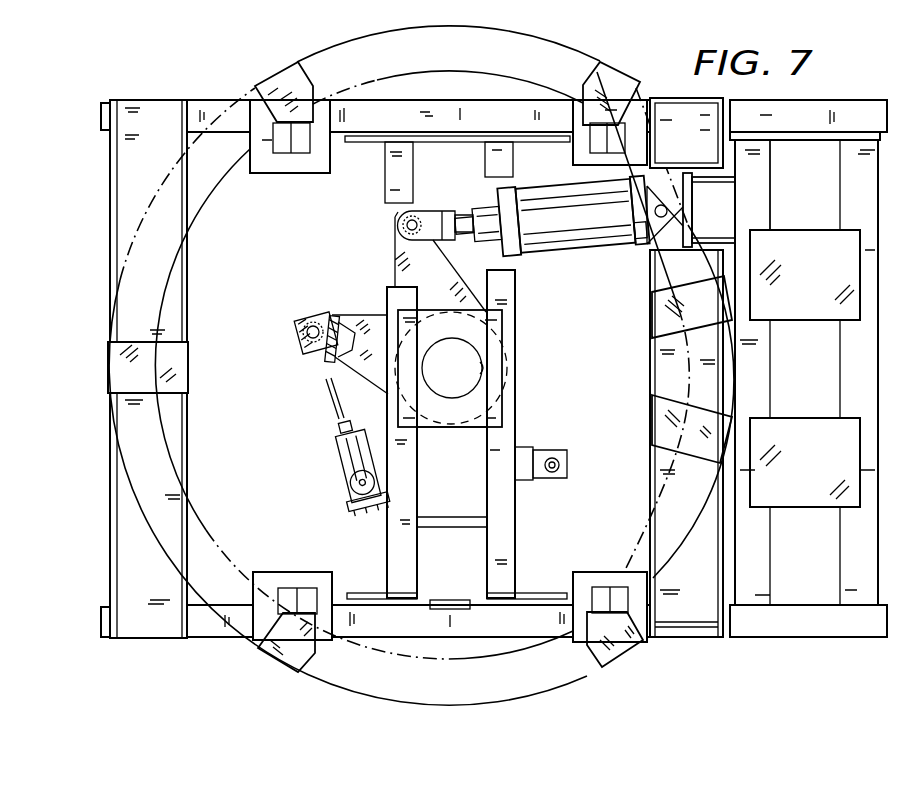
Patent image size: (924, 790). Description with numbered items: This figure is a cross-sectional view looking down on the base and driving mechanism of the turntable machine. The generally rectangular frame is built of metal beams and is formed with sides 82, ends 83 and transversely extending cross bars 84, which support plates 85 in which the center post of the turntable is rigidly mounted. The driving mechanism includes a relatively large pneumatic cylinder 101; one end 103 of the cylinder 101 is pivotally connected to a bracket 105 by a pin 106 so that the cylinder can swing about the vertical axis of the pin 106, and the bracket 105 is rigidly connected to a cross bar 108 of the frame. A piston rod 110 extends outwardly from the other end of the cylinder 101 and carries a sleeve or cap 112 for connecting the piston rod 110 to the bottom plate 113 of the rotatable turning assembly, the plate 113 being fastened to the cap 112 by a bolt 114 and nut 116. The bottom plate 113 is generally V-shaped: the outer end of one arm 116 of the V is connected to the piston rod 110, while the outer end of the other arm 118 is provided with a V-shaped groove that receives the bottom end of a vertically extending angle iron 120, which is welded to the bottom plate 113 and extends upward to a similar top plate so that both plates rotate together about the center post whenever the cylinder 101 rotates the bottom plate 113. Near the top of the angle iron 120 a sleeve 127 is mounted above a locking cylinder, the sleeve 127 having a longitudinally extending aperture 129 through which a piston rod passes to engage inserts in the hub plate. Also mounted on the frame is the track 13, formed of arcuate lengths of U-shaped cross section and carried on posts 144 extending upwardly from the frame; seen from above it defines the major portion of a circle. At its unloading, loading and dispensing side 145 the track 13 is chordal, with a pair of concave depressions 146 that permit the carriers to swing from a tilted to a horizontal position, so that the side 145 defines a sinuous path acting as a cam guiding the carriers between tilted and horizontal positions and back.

The track 13 is at (588, 677).
The sides 82 is at (122, 157).
The ends 83 is at (203, 110).
The cross bars 84 is at (389, 556).
The plates 85 is at (498, 334).
The pneumatic cylinder 101 is at (550, 238).
The end of cylinder 103 is at (627, 247).
The bracket 105 is at (688, 203).
The pin 106 is at (668, 213).
The cross bar 108 is at (765, 176).
The piston rod 110 is at (462, 214).
The sleeve or cap 112 is at (446, 214).
The bottom plate 113 is at (398, 270).
The bolt 114 is at (401, 221).
The arm of the V 116 is at (447, 263).
The other arm 118 is at (370, 369).
The angle iron 120 is at (356, 318).
The sleeve 127 is at (308, 316).
The aperture 129 is at (309, 349).
The posts 144 is at (641, 649).
The unloading, loading and dispensing side 145 is at (656, 375).
The concave depressions 146 is at (657, 178).